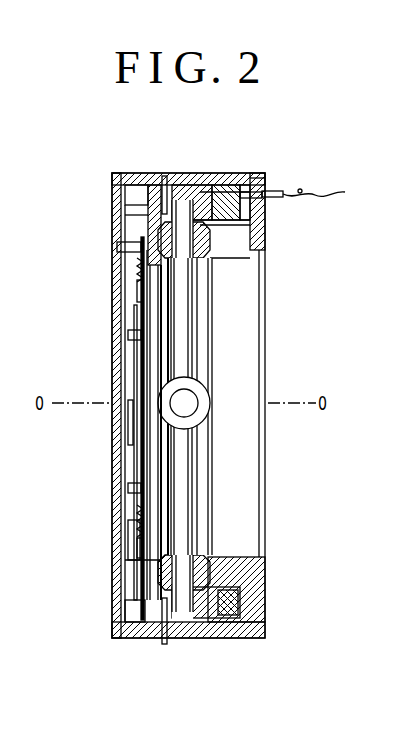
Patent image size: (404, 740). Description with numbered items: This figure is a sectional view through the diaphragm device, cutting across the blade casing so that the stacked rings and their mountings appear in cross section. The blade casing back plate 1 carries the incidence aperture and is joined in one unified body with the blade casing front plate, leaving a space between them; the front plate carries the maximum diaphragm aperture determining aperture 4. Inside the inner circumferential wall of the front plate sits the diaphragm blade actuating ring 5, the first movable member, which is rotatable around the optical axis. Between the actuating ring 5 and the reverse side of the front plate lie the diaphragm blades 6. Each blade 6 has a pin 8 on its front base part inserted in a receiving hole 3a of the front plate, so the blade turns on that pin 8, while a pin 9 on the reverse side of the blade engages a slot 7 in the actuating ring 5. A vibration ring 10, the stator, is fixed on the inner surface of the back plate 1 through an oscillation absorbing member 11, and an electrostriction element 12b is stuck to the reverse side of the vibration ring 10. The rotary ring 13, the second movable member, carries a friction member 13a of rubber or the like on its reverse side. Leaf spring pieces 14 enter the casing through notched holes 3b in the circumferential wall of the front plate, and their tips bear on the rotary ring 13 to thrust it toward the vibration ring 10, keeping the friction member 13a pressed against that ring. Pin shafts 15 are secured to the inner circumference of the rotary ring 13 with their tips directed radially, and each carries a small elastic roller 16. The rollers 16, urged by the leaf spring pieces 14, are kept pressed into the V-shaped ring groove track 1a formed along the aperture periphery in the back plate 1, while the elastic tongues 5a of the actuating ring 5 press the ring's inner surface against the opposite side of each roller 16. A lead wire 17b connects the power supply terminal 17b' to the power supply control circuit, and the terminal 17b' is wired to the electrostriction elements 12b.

The blade casing back plate 1 is at (258, 256).
The V-shaped ring groove track 1a is at (216, 237).
The receiving hole 3a is at (141, 268).
The notched hole 3b is at (178, 198).
The maximum diaphragm aperture determining aperture 4 is at (134, 463).
The diaphragm blade actuating ring 5 is at (140, 195).
The elastic tongue 5a is at (145, 190).
The diaphragm blade 6 is at (133, 437).
The slot 7 is at (137, 290).
The pin 8 is at (118, 247).
The pin 9 is at (140, 272).
The vibration ring 10 is at (250, 185).
The oscillation absorbing member 11 is at (262, 212).
The electrostriction element 12b is at (245, 222).
The rotary ring 13 is at (203, 200).
The friction member 13a is at (222, 195).
The leaf spring piece 14 is at (164, 178).
The pin shaft 15 is at (198, 275).
The small elastic roller 16 is at (193, 262).
The lead wire 17b is at (326, 224).
The power supply terminal 17b' is at (330, 162).